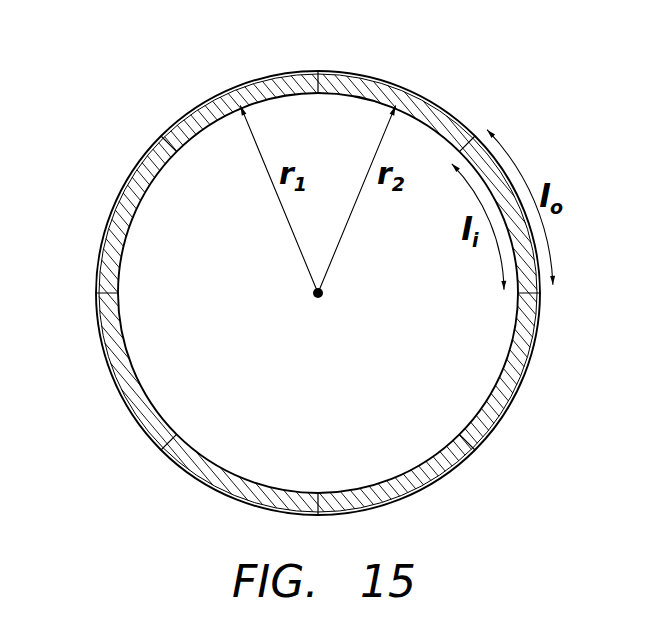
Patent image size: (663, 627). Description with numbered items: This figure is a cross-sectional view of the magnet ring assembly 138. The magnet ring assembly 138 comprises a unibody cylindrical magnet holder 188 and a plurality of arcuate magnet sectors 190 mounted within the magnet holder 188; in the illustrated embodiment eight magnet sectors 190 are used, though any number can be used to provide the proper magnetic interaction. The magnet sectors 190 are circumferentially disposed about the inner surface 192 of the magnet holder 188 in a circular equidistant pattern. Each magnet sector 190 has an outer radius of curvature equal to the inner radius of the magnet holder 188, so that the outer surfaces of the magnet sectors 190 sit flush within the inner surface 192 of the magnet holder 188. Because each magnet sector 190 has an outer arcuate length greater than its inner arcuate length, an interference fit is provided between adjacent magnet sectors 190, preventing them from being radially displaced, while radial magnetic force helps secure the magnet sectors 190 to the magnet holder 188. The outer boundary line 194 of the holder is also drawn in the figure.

The magnet ring assembly 138 is at (282, 272).
The magnet holder 188 is at (127, 184).
The magnet sectors 190 is at (497, 411).
The inner surface 192 is at (152, 151).
The outer layer 194 is at (103, 238).